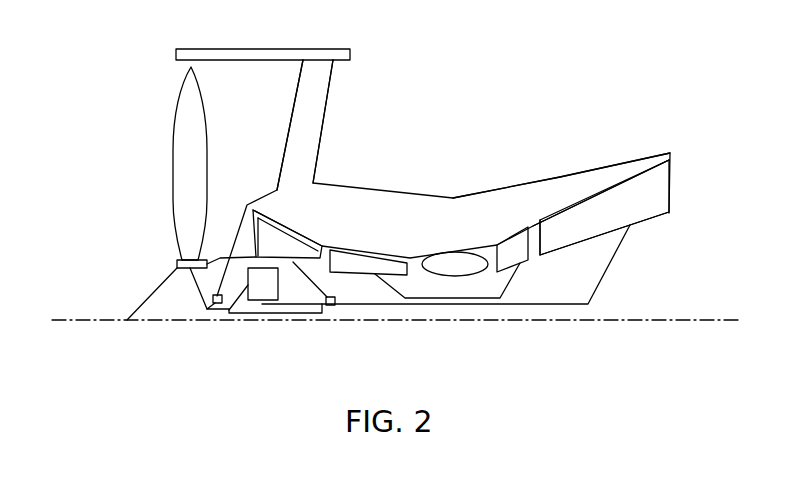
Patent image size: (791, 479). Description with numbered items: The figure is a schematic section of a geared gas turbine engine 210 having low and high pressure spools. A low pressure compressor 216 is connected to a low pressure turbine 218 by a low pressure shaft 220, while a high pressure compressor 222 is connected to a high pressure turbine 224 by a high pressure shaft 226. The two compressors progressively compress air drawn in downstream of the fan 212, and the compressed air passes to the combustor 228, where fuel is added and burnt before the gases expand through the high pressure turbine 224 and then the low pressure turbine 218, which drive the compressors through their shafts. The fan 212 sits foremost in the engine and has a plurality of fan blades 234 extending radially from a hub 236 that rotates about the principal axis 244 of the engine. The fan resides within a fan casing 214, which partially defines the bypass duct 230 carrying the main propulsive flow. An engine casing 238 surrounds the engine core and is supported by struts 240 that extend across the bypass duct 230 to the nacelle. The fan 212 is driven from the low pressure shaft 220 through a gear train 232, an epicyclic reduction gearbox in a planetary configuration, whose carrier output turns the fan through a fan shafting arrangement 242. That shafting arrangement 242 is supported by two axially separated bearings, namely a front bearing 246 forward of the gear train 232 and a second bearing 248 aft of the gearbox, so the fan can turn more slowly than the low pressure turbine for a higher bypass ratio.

The geared gas turbine engine 210 is at (581, 62).
The fan 212 is at (172, 193).
The fan casing 214 is at (228, 30).
The low pressure compressor 216 is at (265, 226).
The low pressure turbine 218 is at (622, 213).
The low pressure shaft 220 is at (385, 304).
The high pressure compressor 222 is at (353, 260).
The high pressure turbine 224 is at (513, 238).
The high pressure shaft 226 is at (453, 298).
The combustor 228 is at (460, 250).
The bypass duct 230 is at (277, 108).
The gear train 232 is at (255, 293).
The fan blades 234 is at (187, 195).
The hub 236 is at (177, 262).
The engine casing 238 is at (578, 197).
The struts 240 is at (331, 78).
The fan shafting arrangement 242 is at (208, 323).
The principal axis 244 is at (90, 320).
The front bearing 246 is at (205, 300).
The second bearing 248 is at (322, 306).